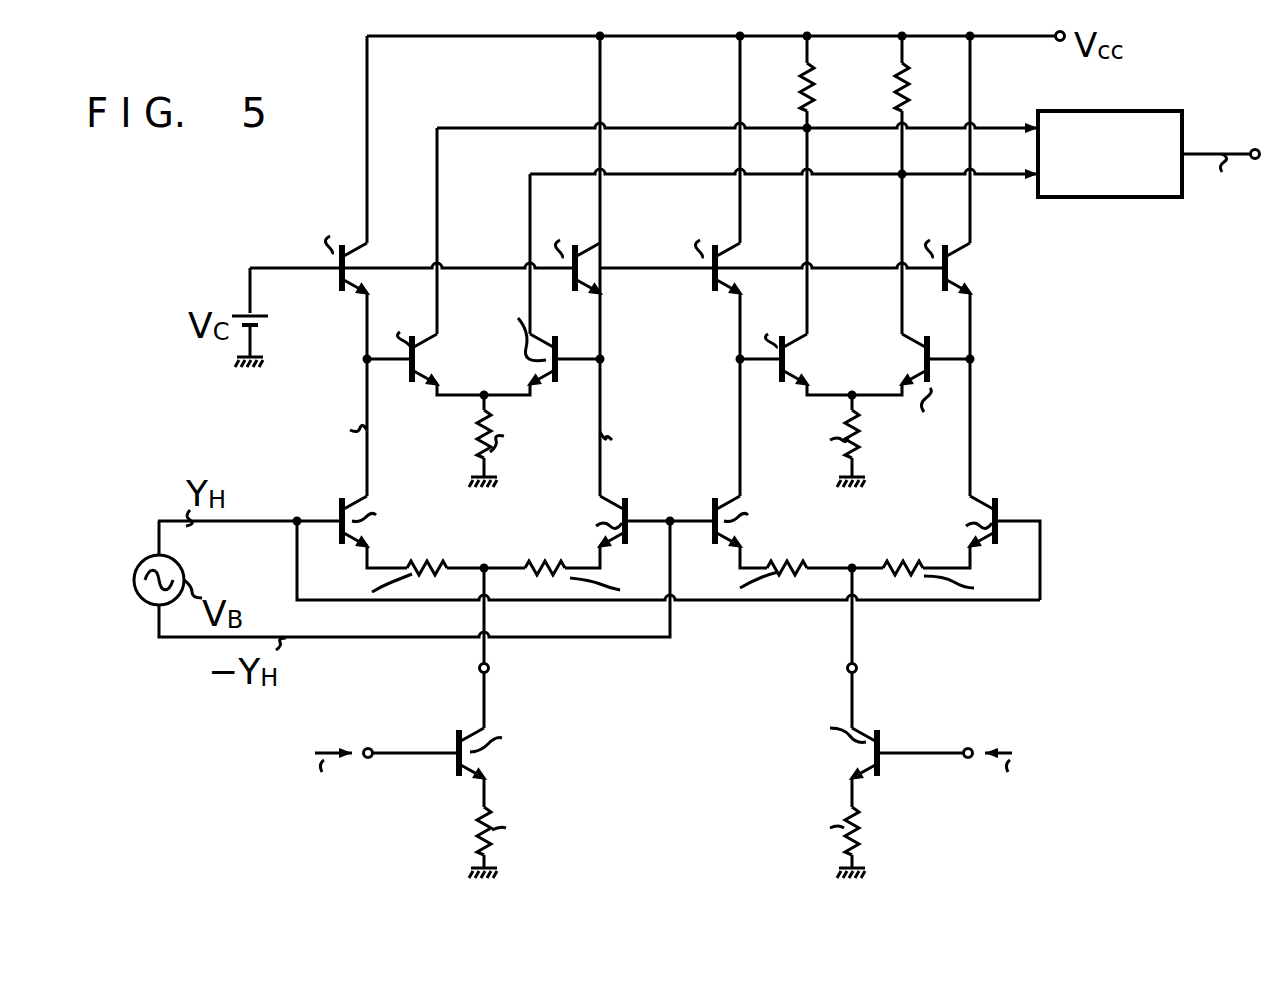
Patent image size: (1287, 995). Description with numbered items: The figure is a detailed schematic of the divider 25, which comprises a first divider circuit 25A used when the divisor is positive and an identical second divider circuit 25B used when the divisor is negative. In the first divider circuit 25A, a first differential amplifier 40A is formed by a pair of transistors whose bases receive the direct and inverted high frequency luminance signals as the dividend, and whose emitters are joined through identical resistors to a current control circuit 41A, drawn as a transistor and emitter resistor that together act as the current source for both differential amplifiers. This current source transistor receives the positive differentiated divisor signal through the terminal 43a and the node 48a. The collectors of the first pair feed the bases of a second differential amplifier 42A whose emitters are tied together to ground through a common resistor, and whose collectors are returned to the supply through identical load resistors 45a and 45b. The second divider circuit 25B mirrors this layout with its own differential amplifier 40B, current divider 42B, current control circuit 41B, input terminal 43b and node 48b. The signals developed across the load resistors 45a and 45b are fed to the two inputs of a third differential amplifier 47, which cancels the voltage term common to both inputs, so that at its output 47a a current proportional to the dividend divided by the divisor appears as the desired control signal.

The divider 25 is at (602, 542).
The first divider circuit 25A is at (428, 542).
The second divider circuit 25B is at (835, 547).
The first differential amplifier pair 40A is at (522, 543).
The second differential amplifier pair 40B is at (886, 548).
The current control circuit 41A is at (452, 714).
The second current source 41B is at (960, 714).
The first current divider 42A is at (520, 358).
The second current divider 42B is at (876, 358).
The terminal 43a is at (352, 746).
The second input terminal 43b is at (976, 756).
The load resistor 45a is at (800, 76).
The load resistor 45b is at (896, 86).
The third differential amplifier circuit 47 is at (1138, 197).
The output 47a is at (1256, 150).
The first connection node 48a is at (490, 668).
The second connection node 48b is at (848, 668).